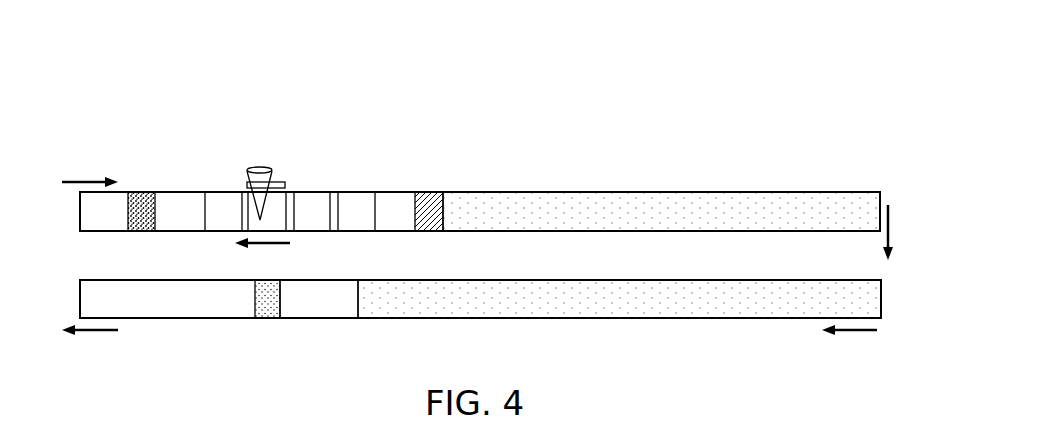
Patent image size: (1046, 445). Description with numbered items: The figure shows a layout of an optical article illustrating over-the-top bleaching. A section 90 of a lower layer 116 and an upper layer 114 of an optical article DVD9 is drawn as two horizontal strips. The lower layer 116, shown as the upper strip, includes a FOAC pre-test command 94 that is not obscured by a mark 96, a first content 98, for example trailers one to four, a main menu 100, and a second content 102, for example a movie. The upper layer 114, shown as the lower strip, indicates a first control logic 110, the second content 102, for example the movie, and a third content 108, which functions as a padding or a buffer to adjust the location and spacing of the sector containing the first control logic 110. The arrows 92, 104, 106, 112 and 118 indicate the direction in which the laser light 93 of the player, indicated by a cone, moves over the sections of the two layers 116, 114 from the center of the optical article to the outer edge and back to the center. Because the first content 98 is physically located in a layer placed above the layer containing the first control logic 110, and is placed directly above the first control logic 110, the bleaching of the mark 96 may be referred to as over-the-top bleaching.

The section 90 is at (776, 80).
The arrow 92 is at (88, 180).
The laser light 93 is at (260, 168).
The FOAC pre-test command 94 is at (145, 192).
The mark 96 is at (283, 182).
The first content 98 is at (313, 225).
The main menu 100 is at (432, 192).
The second content 102 is at (710, 197).
The arrow 104 is at (884, 238).
The arrow 106 is at (855, 332).
The third content 108 is at (340, 310).
The first control logic 110 is at (270, 314).
The arrow 112 is at (98, 332).
The layer 1 114 is at (78, 299).
The layer 0 116 is at (80, 212).
The arrow 118 is at (257, 243).